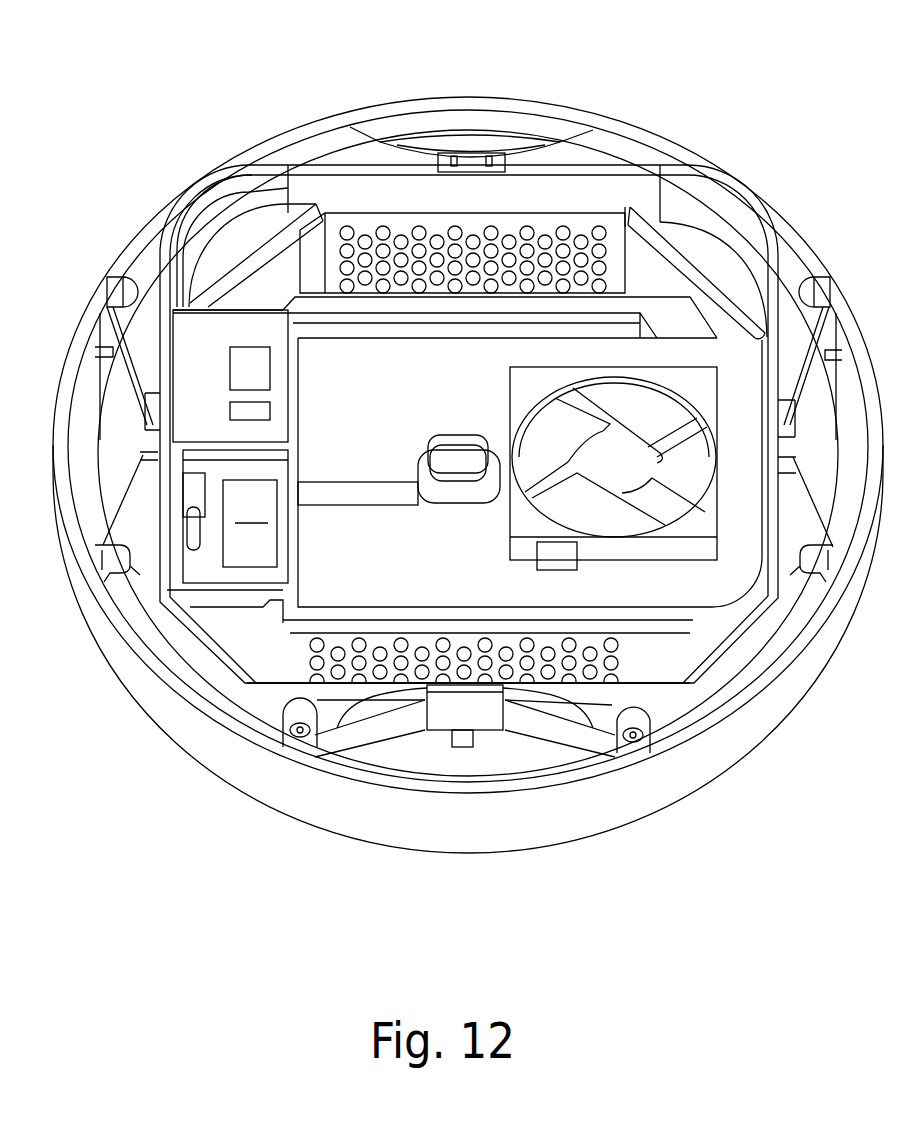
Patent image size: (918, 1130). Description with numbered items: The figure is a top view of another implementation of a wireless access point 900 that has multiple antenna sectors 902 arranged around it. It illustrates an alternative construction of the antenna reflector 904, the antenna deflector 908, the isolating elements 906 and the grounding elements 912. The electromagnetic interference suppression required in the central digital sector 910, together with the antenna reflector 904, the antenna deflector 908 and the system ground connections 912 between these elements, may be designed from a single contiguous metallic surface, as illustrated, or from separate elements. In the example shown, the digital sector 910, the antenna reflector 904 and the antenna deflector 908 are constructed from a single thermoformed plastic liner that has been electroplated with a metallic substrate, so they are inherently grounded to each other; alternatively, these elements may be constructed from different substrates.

The wireless access point 900 is at (726, 76).
The antenna sectors 902 is at (480, 837).
The antenna reflector 904 is at (482, 715).
The isolating elements 906 is at (364, 740).
The antenna deflector 908 is at (410, 755).
The central digital sector 910 is at (490, 397).
The grounding elements 912 is at (112, 578).